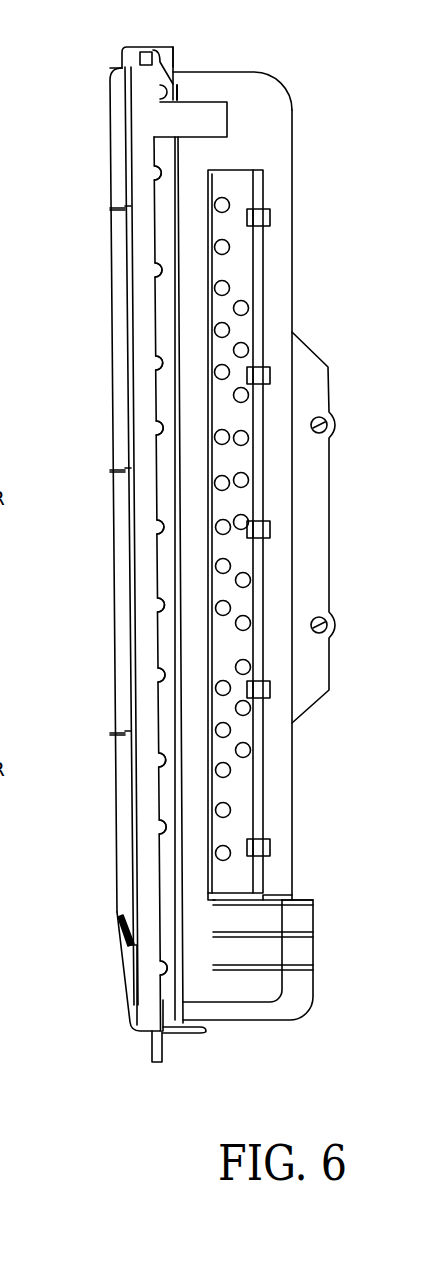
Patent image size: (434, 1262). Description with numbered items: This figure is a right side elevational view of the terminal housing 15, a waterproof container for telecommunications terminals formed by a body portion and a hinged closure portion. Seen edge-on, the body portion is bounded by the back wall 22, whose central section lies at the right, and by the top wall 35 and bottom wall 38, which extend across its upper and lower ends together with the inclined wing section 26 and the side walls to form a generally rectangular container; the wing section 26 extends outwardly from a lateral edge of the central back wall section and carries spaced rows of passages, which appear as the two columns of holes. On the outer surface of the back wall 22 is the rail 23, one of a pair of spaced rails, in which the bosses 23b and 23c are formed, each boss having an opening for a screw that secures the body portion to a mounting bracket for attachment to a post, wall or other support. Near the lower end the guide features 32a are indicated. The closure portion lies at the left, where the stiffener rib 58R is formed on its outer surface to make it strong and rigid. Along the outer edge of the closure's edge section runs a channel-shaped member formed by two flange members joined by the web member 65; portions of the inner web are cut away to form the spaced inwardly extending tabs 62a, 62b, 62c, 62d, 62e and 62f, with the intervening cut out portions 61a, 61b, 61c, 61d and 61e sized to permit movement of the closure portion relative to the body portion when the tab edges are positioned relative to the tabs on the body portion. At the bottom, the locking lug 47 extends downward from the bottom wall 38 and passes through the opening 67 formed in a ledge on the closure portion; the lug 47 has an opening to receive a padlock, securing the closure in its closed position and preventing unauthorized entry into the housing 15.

The terminal housing 15 is at (277, 547).
The top wall 35 is at (238, 72).
The back wall 22 is at (292, 310).
The bottom wall 38 is at (268, 1000).
The guide rails 32a is at (296, 897).
The inclined wing section 26 is at (190, 286).
The rail 23 is at (341, 527).
The boss 23b is at (328, 414).
The boss 23c is at (332, 622).
The web member 65 is at (93, 539).
The stiffener rib 58R is at (116, 925).
The cut out portion 61a is at (160, 185).
The cut out portion 61b is at (157, 375).
The cut out portion 61c is at (160, 537).
The cut out portion 61d is at (160, 687).
The cut out portion 61e is at (160, 840).
The tab 62a is at (158, 106).
The tab 62b is at (158, 283).
The tab 62c is at (158, 443).
The tab 62d is at (160, 618).
The tab 62e is at (160, 773).
The tab 62f is at (163, 978).
The locking lug 47 is at (163, 1052).
The opening 67 is at (207, 1031).